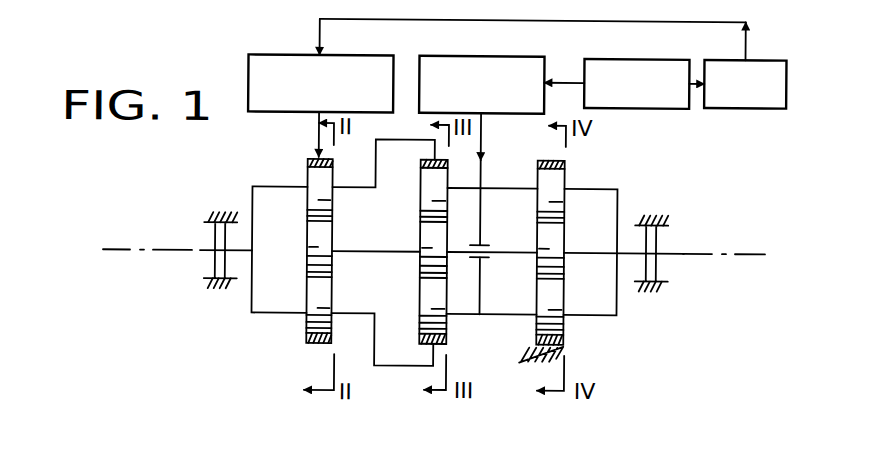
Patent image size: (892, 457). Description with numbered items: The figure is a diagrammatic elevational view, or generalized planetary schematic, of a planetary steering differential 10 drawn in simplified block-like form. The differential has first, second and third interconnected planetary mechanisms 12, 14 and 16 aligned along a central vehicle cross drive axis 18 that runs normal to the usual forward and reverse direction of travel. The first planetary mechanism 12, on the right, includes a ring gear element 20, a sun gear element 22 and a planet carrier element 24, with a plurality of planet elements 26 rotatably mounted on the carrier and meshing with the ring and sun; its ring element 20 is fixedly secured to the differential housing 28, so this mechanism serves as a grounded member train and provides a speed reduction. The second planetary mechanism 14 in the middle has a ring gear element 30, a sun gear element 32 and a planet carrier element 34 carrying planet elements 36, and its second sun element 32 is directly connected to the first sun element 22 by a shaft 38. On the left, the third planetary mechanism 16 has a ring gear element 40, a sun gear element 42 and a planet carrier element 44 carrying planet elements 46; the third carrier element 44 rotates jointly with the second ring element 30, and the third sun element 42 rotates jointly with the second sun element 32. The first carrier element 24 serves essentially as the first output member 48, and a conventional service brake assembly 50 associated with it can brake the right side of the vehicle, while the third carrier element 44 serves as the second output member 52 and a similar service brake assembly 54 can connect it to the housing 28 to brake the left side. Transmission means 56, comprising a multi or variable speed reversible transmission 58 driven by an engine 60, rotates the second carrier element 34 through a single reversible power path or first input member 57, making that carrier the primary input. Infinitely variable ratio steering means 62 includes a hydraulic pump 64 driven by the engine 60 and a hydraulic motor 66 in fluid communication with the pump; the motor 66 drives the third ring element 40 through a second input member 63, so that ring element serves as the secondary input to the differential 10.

The planetary steering differential 10 is at (243, 49).
The first planetary mechanism 12 is at (568, 346).
The second planetary mechanism 14 is at (425, 348).
The third planetary mechanism 16 is at (310, 348).
The central vehicle cross drive axis 18 is at (170, 247).
The ring gear element 20 is at (567, 166).
The sun gear element 22 is at (552, 250).
The planet carrier element 24 is at (604, 189).
The planet elements 26 is at (537, 313).
The differential housing 28 is at (220, 223).
The ring gear element 30 is at (424, 161).
The sun gear element 32 is at (430, 259).
The planet carrier element 34 is at (463, 189).
The planet elements 36 is at (425, 196).
The shaft 38 is at (481, 259).
The ring gear element 40 is at (334, 162).
The sun gear element 42 is at (309, 249).
The planet carrier element 44 is at (283, 189).
The planet elements 46 is at (313, 322).
The first output member 48 is at (628, 257).
The service brake assembly 50 is at (665, 240).
The second output member 52 is at (241, 256).
The service brake assembly 54 is at (211, 232).
The transmission means 56 is at (512, 56).
The first input member 57 is at (481, 133).
The transmission 58 is at (470, 56).
The engine 60 is at (620, 58).
The infinitely variable ratio steering means 62 is at (279, 114).
The second input member 63 is at (316, 143).
The hydraulic pump 64 is at (745, 107).
The hydraulic motor 66 is at (272, 56).